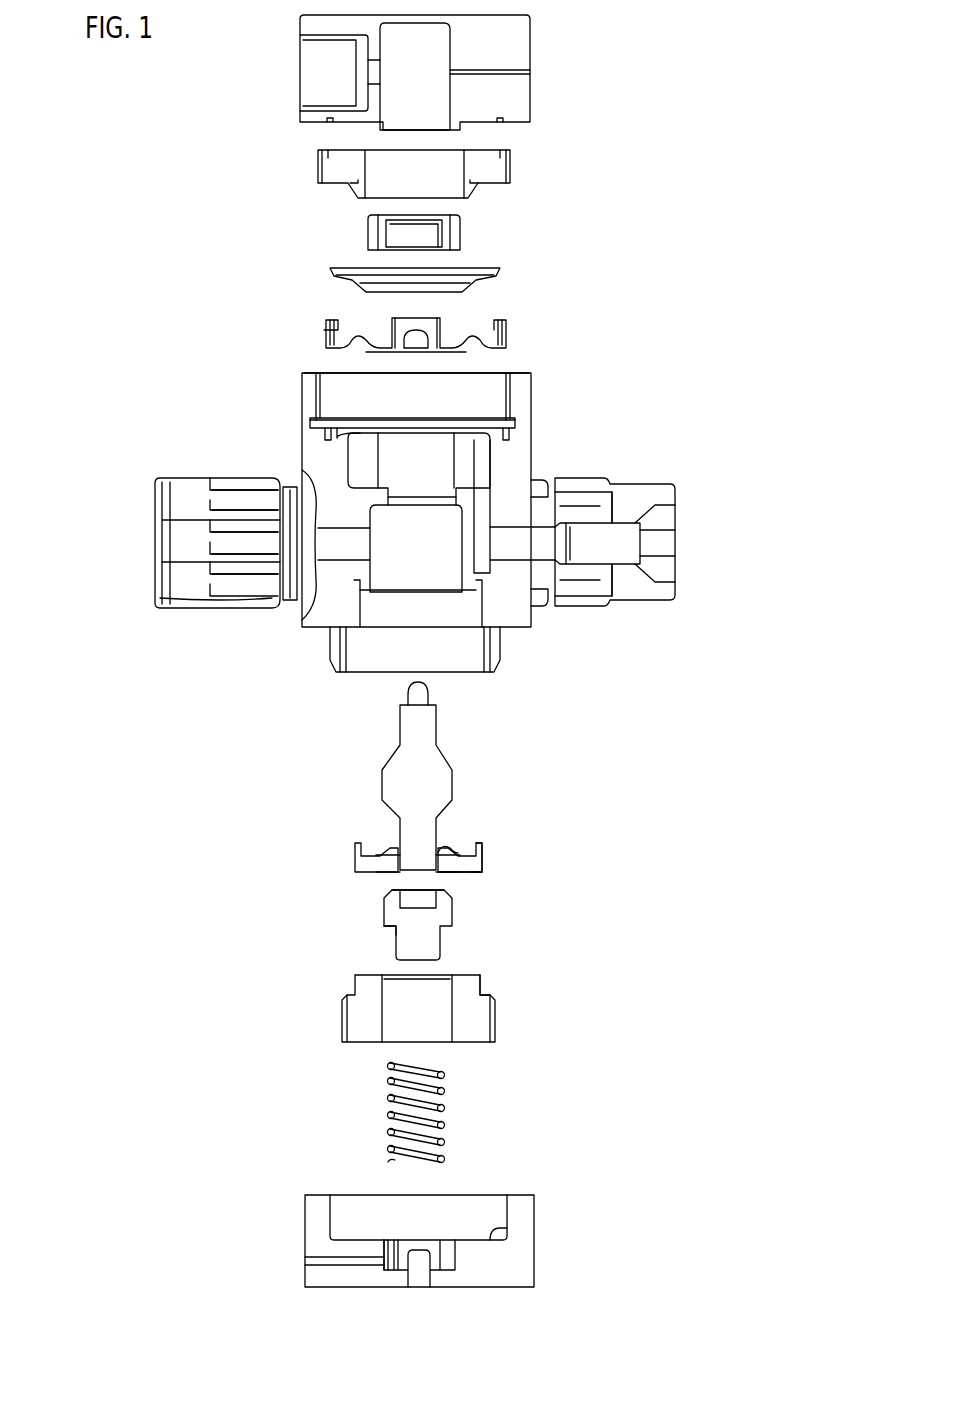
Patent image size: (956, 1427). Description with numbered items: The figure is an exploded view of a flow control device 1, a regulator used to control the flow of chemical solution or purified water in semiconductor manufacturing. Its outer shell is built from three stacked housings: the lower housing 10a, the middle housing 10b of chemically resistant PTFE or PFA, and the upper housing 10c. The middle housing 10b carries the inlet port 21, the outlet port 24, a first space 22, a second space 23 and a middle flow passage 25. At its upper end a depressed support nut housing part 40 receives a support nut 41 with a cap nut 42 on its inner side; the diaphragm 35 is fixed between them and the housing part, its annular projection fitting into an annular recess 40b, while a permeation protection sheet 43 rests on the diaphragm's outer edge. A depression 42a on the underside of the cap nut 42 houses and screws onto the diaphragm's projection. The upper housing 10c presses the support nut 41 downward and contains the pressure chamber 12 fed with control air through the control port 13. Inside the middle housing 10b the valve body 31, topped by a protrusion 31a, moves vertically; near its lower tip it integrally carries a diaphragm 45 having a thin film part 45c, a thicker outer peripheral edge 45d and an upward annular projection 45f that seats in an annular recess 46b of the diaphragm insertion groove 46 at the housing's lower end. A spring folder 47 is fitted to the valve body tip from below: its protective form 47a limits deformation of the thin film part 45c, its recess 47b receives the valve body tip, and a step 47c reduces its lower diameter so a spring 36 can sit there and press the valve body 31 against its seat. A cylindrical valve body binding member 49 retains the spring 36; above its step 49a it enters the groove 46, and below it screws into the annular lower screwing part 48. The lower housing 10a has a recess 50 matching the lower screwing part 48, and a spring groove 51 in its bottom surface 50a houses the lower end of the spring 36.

The flow control device 1 is at (741, 112).
The lower housing 10a is at (535, 1200).
The middle housing 10b is at (533, 395).
The upper housing 10c is at (530, 30).
The pressure chamber 12 is at (428, 88).
The control port 13 is at (318, 70).
The inlet port 21 is at (332, 540).
The first space 22 is at (428, 564).
The second space 23 is at (428, 481).
The outlet port 24 is at (513, 548).
The middle flow passage 25 is at (482, 472).
The valve body 31 is at (410, 737).
The protrusion 31a is at (414, 692).
The diaphragm 35 is at (498, 326).
The spring 36 is at (448, 1082).
The support nut housing part 40 is at (493, 375).
The annular recess 40b is at (512, 433).
The support nut 41 is at (512, 158).
The cap nut 42 is at (462, 220).
The depression 42a is at (404, 240).
The permeation protection sheet 43 is at (500, 270).
The diaphragm 45 is at (362, 862).
The thin film part 45c is at (450, 850).
The outer peripheral edge 45d is at (468, 872).
The annular projection 45f is at (482, 845).
The diaphragm insertion groove 46 is at (460, 648).
The annular recess 46b is at (330, 598).
The spring folder 47 is at (454, 918).
The protective form 47a is at (390, 893).
The recess 47b is at (414, 903).
The step 47c is at (392, 932).
The lower screwing part 48 is at (318, 680).
The valve body binding member 49 is at (497, 1018).
The step 49a is at (484, 998).
The recess 50 is at (485, 1208).
The bottom surface 50a is at (498, 1230).
The spring groove 51 is at (390, 1258).